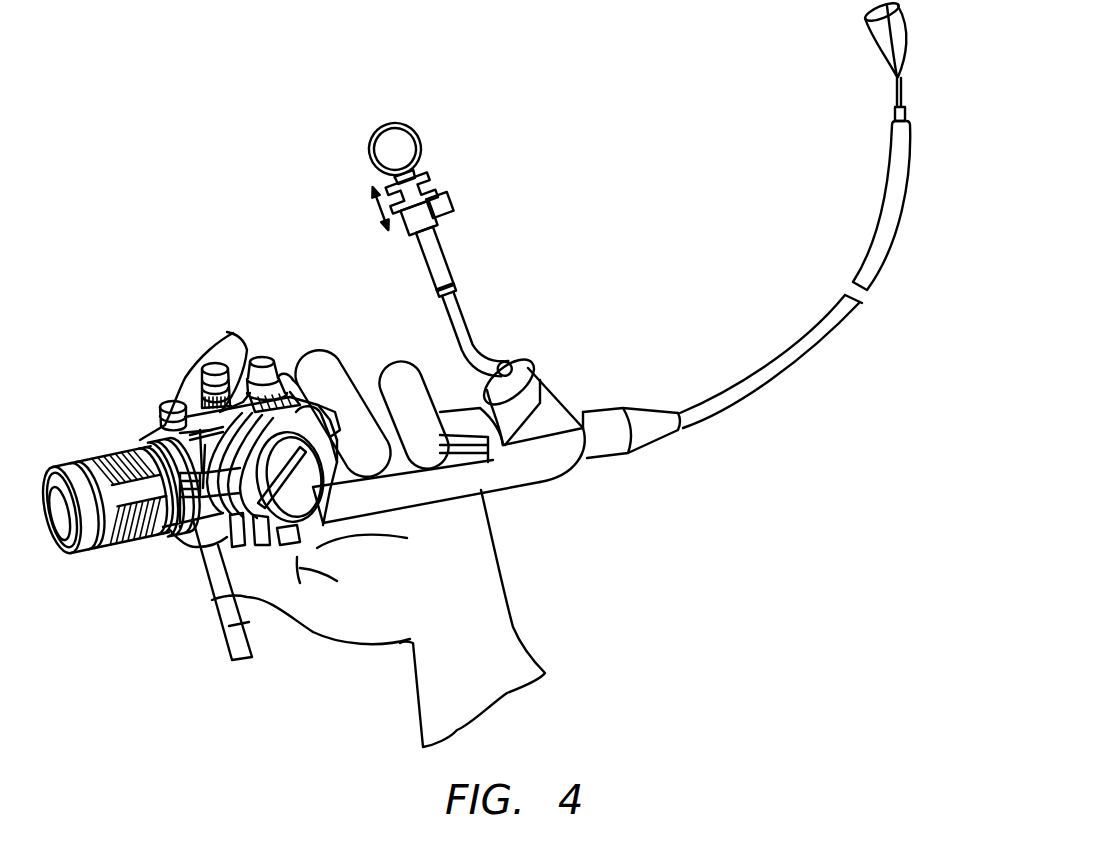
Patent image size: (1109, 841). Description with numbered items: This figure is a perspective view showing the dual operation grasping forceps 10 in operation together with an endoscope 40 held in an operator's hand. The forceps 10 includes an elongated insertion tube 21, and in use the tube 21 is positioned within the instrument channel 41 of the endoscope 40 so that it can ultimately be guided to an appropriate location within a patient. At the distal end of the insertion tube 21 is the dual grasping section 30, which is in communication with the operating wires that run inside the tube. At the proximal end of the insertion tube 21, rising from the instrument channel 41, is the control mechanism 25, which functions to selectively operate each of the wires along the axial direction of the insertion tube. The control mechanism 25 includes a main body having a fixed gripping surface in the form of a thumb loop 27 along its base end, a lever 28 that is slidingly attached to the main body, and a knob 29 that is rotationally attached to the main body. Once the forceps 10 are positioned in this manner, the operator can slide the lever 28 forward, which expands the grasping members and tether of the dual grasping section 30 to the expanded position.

The forceps 10 is at (305, 98).
The insertion tube 21 is at (900, 92).
The control mechanism 25 is at (470, 236).
The thumb loop 27 is at (417, 127).
The lever 28 is at (395, 178).
The knob 29 is at (453, 203).
The dual grasping section 30 is at (850, 1).
The endoscope 40 is at (572, 492).
The instrument channel 41 is at (503, 362).